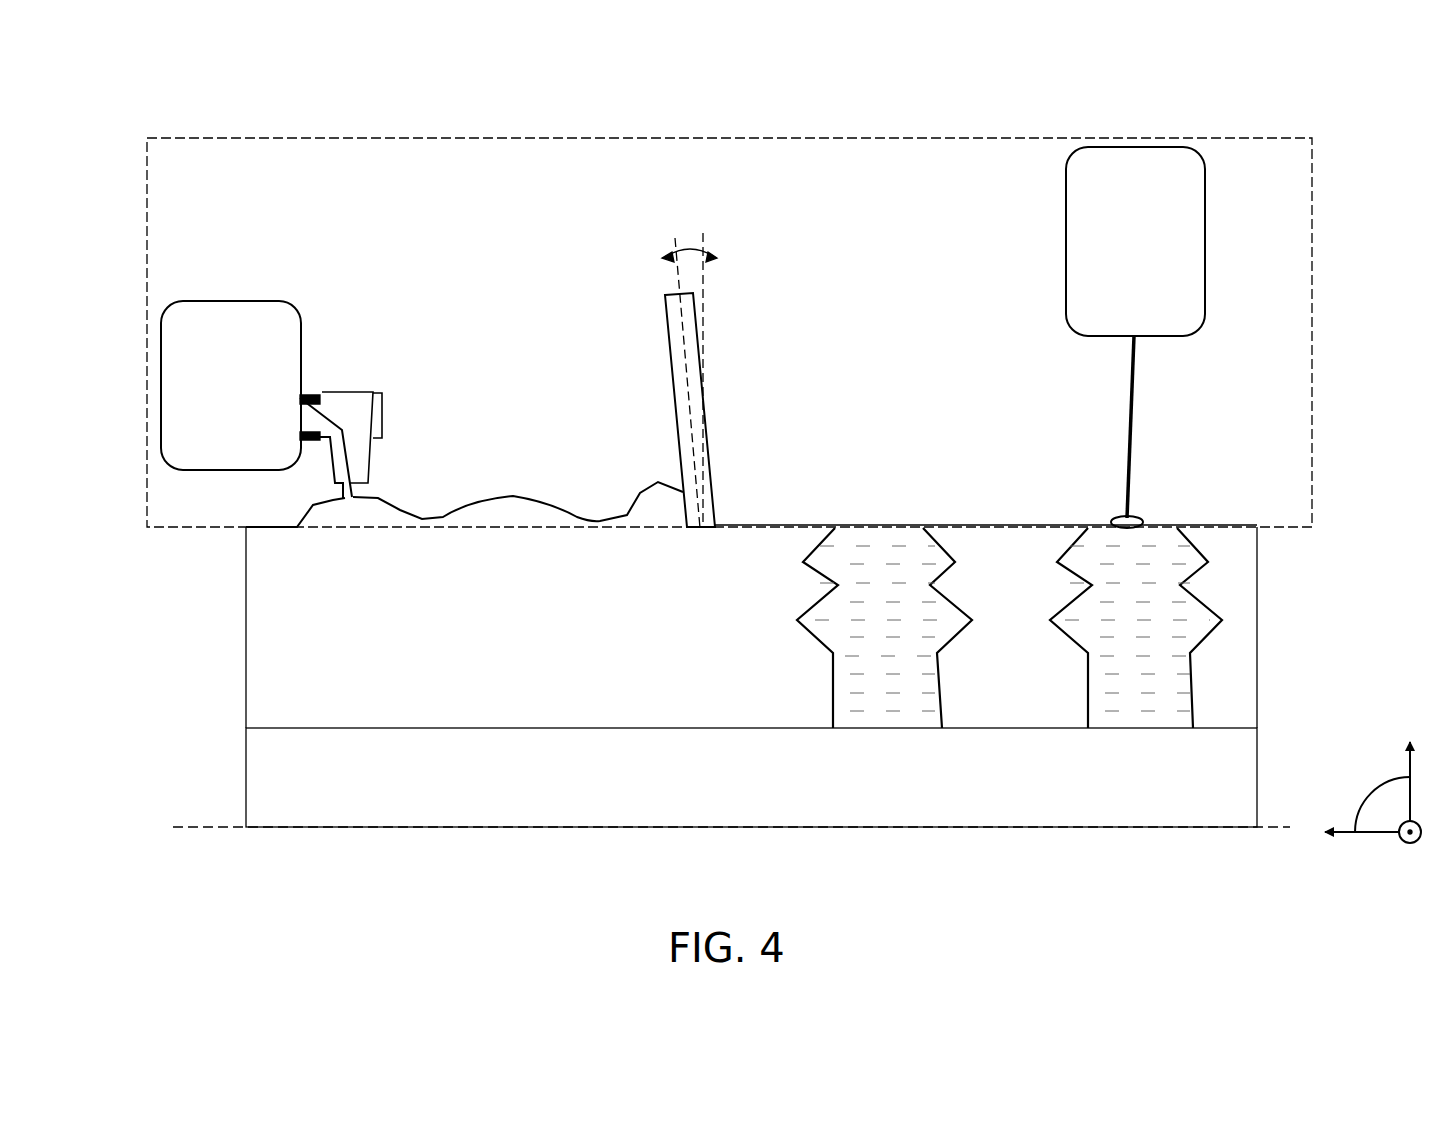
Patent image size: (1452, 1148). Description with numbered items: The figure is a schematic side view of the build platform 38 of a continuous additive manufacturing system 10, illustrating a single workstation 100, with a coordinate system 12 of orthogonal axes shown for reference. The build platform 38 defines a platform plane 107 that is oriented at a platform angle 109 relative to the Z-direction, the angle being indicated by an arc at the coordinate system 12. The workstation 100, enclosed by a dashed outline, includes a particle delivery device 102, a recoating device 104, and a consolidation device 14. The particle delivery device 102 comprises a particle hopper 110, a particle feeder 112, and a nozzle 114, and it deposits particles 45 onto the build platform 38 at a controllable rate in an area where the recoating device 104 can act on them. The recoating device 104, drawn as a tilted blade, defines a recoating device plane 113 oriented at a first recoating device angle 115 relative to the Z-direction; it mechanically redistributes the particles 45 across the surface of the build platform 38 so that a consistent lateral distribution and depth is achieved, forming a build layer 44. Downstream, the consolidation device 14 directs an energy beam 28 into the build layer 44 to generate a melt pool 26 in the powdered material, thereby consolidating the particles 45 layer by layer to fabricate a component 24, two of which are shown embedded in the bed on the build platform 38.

The continuous additive manufacturing system 10 is at (1305, 88).
The workstation 100 is at (634, 136).
The particle delivery device 102 is at (212, 322).
The particle hopper 110 is at (270, 322).
The particle feeder 112 is at (305, 393).
The nozzle 114 is at (367, 398).
The recoating device 104 is at (700, 316).
The recoating device plane 113 is at (678, 278).
The first recoating device angle 115 is at (690, 244).
The consolidation device 14 is at (1080, 254).
The energy beam 28 is at (1128, 400).
The melt pool 26 is at (1135, 517).
The component 24 is at (1100, 542).
The build layer 44 is at (786, 524).
The particles 45 is at (400, 520).
The build platform 38 is at (400, 815).
The platform plane 107 is at (196, 825).
The platform angle 109 is at (1366, 785).
The coordinate system 12 is at (1376, 844).